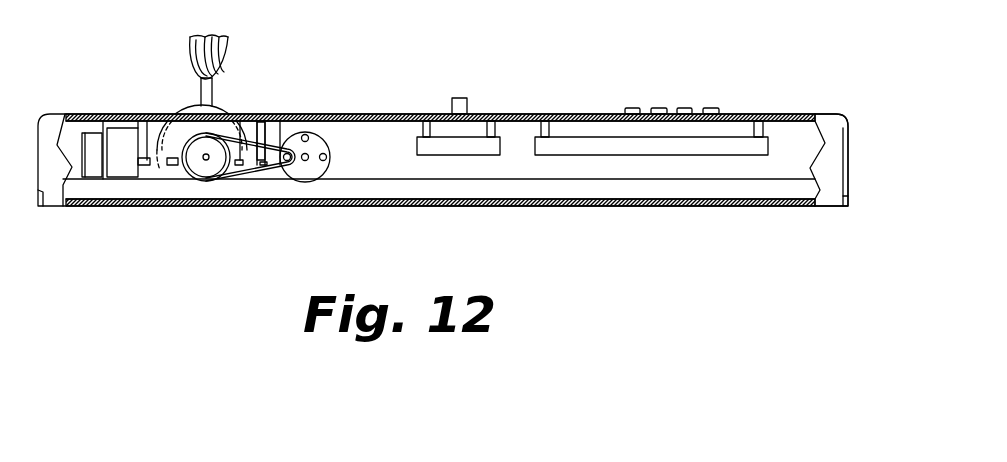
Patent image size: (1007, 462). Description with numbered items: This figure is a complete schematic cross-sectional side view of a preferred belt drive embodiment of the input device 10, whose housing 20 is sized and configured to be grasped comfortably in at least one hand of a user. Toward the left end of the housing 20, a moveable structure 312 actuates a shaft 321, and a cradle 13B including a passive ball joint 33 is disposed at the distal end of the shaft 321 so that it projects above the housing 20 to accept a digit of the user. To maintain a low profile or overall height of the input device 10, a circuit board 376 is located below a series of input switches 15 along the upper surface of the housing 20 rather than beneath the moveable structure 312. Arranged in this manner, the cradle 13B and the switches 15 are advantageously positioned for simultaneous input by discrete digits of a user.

The input device 10 is at (768, 49).
The cradle 13B is at (218, 32).
The input switches 15 is at (641, 96).
The housing 20 is at (849, 132).
The passive ball joint 33 is at (234, 77).
The moveable structure 312 is at (126, 97).
The shaft 321 is at (197, 97).
The circuit board 376 is at (747, 155).